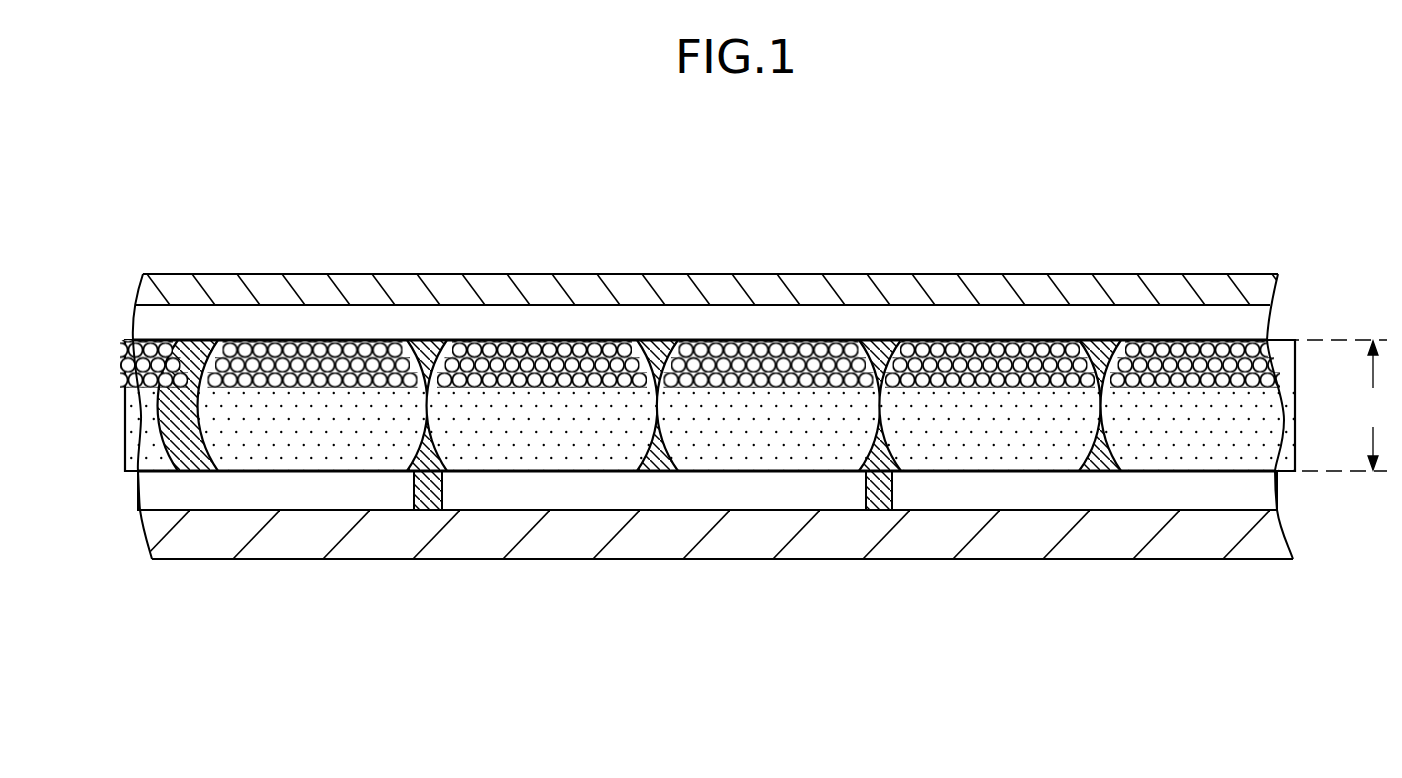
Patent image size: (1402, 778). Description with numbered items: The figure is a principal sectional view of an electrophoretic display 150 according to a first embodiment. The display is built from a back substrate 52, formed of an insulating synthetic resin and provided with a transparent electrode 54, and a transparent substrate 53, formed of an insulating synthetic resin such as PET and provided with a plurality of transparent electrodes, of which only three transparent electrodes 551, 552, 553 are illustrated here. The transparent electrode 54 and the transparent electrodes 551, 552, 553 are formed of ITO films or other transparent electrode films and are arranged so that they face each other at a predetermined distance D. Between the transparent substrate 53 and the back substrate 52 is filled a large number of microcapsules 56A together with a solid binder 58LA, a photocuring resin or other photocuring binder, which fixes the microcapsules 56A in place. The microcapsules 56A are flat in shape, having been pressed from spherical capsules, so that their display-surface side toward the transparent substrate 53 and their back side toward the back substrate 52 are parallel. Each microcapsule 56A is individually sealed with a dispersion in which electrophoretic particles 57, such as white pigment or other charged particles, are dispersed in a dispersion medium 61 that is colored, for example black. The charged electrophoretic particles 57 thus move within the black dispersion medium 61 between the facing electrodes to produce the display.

The electrophoretic display 150 is at (763, 170).
The back substrate 52 is at (215, 283).
The transparent electrode 54 is at (297, 325).
The transparent substrate 53 is at (532, 547).
The transparent electrode 551 is at (1213, 493).
The transparent electrode 552 is at (765, 498).
The transparent electrode 553 is at (297, 497).
The microcapsule 56A is at (196, 450).
The binder 58LA is at (1090, 350).
The electrophoretic particles 57 is at (572, 382).
The dispersion medium 61 is at (497, 450).
The predetermined distance D is at (1332, 405).